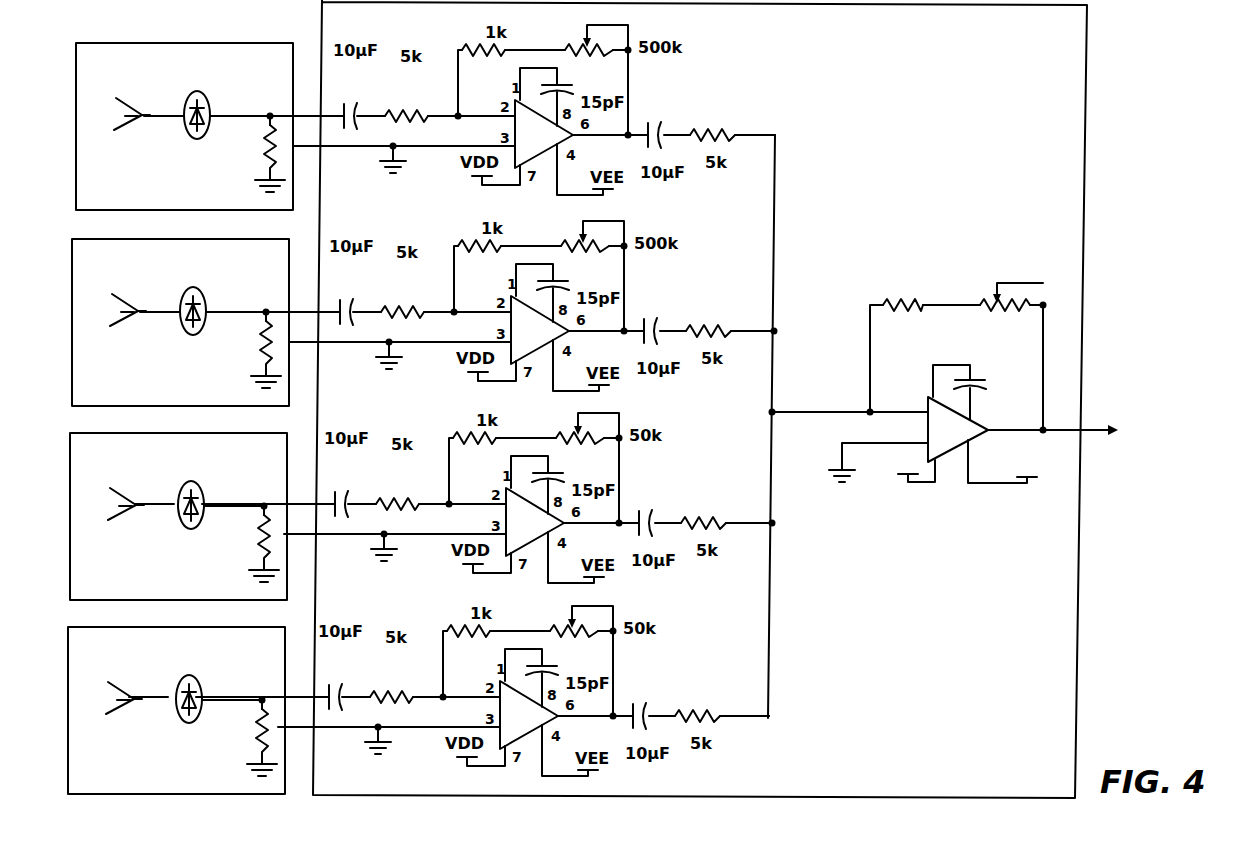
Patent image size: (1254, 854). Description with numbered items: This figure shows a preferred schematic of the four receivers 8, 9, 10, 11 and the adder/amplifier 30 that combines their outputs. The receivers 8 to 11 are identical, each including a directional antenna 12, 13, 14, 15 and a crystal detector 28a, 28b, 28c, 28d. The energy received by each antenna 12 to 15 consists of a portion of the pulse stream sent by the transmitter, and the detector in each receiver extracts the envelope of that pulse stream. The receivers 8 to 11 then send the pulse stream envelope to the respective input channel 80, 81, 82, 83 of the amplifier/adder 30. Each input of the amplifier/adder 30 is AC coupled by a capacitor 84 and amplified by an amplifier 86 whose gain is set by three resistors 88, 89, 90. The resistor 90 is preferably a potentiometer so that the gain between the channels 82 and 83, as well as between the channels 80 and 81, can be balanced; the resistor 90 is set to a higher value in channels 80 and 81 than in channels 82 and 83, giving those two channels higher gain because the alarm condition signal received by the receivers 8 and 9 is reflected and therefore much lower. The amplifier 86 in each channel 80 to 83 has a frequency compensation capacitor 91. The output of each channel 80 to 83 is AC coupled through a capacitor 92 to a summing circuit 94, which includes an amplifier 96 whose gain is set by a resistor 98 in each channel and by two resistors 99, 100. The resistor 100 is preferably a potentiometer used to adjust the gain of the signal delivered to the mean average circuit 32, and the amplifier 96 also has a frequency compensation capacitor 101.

The receiver 8 is at (76, 119).
The receiver 9 is at (72, 315).
The receiver 10 is at (70, 509).
The receiver 11 is at (68, 703).
The directional antenna 12 is at (124, 99).
The directional antenna 13 is at (120, 295).
The directional antenna 14 is at (118, 489).
The directional antenna 15 is at (116, 683).
The crystal detector 28a is at (204, 94).
The crystal detector 28b is at (200, 290).
The crystal detector 28c is at (198, 484).
The crystal detector 28d is at (196, 678).
The adder/amplifier 30 is at (1088, 160).
The mean average circuit 32 is at (1150, 452).
The input channel 80 is at (798, 132).
The input channel 81 is at (788, 323).
The input channel 82 is at (784, 528).
The input channel 83 is at (779, 722).
The capacitor 84 is at (348, 391).
The amplifier 86 is at (536, 424).
The resistor 88 is at (399, 388).
The resistor 89 is at (469, 327).
The resistor 90 is at (574, 327).
The frequency compensation capacitor 91 is at (569, 373).
The capacitor 92 is at (655, 407).
The summing circuit 94 is at (929, 334).
The amplifier 96 is at (960, 446).
The resistor 98 is at (705, 403).
The resistor 99 is at (903, 299).
The resistor 100 is at (980, 299).
The frequency compensation capacitor 101 is at (972, 378).